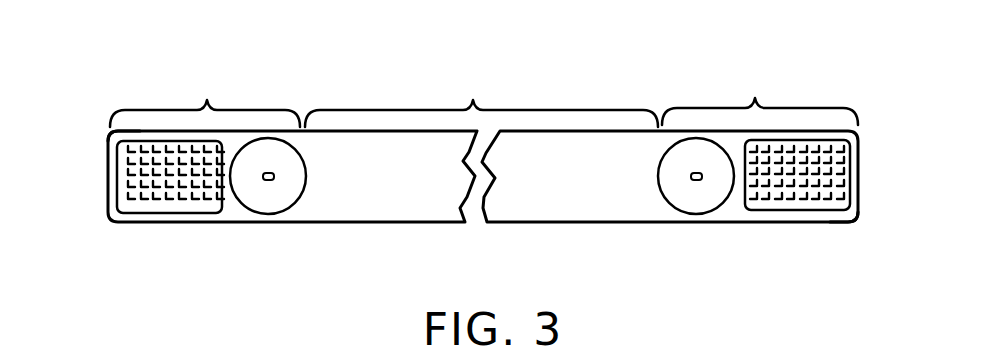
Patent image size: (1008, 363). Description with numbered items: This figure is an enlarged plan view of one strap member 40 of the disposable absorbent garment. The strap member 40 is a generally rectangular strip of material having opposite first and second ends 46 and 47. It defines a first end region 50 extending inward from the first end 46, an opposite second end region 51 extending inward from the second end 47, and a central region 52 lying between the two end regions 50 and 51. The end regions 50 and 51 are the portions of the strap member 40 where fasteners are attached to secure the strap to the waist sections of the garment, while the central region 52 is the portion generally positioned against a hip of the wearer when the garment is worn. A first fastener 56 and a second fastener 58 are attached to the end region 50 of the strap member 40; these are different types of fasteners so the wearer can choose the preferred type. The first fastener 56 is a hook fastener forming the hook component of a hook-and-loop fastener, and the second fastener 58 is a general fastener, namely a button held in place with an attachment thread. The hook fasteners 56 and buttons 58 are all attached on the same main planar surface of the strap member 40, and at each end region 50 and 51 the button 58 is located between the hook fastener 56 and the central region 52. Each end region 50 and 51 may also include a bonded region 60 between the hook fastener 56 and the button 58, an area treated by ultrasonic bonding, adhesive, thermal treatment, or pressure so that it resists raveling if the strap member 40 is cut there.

The strap member 40 is at (89, 203).
The first end 46 is at (108, 158).
The second end 47 is at (858, 180).
The first end region 50 is at (208, 98).
The second end region 51 is at (757, 95).
The central region 52 is at (475, 95).
The first fastener 56 is at (170, 213).
The second fastener 58 is at (301, 195).
The bonded region 60 is at (247, 231).